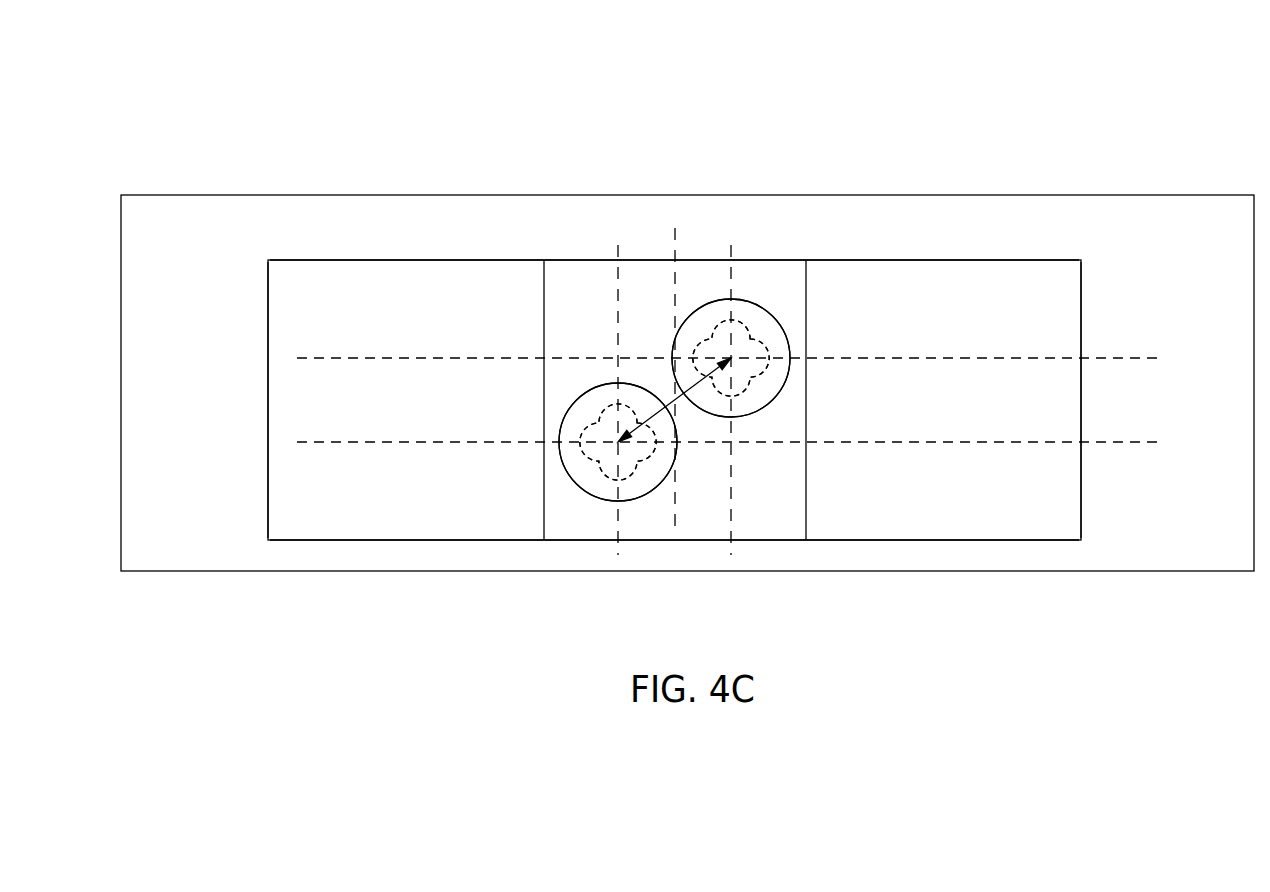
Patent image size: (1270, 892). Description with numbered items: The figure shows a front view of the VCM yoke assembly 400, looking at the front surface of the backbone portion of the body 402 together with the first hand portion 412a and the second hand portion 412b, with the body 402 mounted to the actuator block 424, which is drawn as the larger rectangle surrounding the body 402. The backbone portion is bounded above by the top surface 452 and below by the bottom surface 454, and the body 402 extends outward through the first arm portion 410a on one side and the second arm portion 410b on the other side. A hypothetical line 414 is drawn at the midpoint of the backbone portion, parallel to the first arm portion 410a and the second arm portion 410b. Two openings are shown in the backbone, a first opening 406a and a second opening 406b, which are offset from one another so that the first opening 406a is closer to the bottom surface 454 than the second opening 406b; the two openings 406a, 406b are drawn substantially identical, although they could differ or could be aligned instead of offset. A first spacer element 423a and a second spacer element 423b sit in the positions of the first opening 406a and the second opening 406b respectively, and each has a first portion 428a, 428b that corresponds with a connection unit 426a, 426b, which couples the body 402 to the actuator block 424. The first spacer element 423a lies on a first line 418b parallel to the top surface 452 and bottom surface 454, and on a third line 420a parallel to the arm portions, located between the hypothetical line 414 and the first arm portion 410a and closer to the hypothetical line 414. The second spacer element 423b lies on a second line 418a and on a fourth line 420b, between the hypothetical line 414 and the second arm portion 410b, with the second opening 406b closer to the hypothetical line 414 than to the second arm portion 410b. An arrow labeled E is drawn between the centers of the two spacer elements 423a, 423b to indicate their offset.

The VCM yoke assembly 400 is at (175, 102).
The body 402 is at (361, 259).
The first opening 406a is at (592, 500).
The second opening 406b is at (767, 408).
The first arm portion 410a is at (268, 297).
The second arm portion 410b is at (1081, 400).
The first hand portion 412a is at (405, 520).
The second hand portion 412b is at (897, 523).
The hypothetical line 414 is at (675, 252).
The second line 418a is at (1110, 357).
The first line 418b is at (1135, 442).
The third line 420a is at (621, 523).
The fourth line 420b is at (733, 525).
The first spacer element 423a is at (580, 418).
The second spacer element 423b is at (768, 335).
The actuator block 424 is at (1195, 252).
The connection unit 426a is at (597, 465).
The connection unit 426b is at (745, 385).
The first portion 428a is at (587, 390).
The first portion 428b is at (770, 310).
The top surface 452 is at (930, 259).
The bottom surface 454 is at (950, 540).
The offset distance E is at (665, 388).